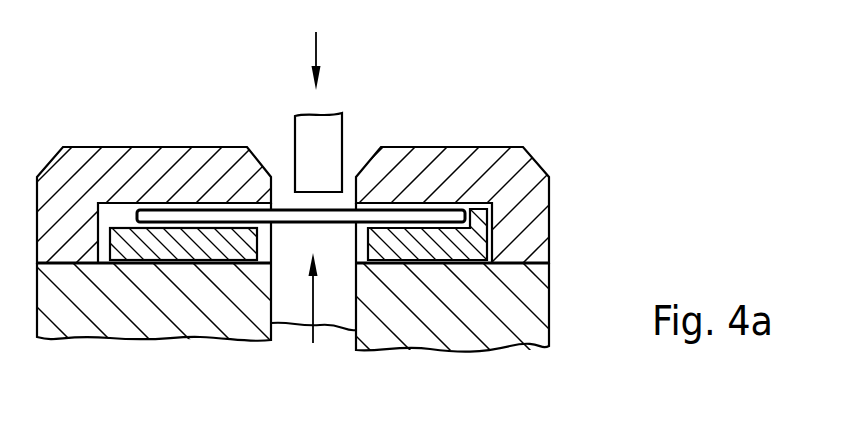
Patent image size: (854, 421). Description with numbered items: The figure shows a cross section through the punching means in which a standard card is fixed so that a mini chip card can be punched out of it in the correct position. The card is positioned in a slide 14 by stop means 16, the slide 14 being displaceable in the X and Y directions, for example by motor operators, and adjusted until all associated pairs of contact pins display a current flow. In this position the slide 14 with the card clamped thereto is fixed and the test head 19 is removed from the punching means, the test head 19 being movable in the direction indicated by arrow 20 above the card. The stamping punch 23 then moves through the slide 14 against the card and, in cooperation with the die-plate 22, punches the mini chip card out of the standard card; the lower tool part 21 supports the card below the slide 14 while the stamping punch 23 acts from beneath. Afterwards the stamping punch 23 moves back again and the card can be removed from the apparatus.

The slide 14 is at (473, 245).
The stop means 16 is at (320, 420).
The test head 19 is at (328, 124).
The punch stroke direction 20 is at (316, 47).
The lower die 21 is at (287, 287).
The die-plate 22 is at (198, 168).
The stamping punch 23 is at (308, 328).